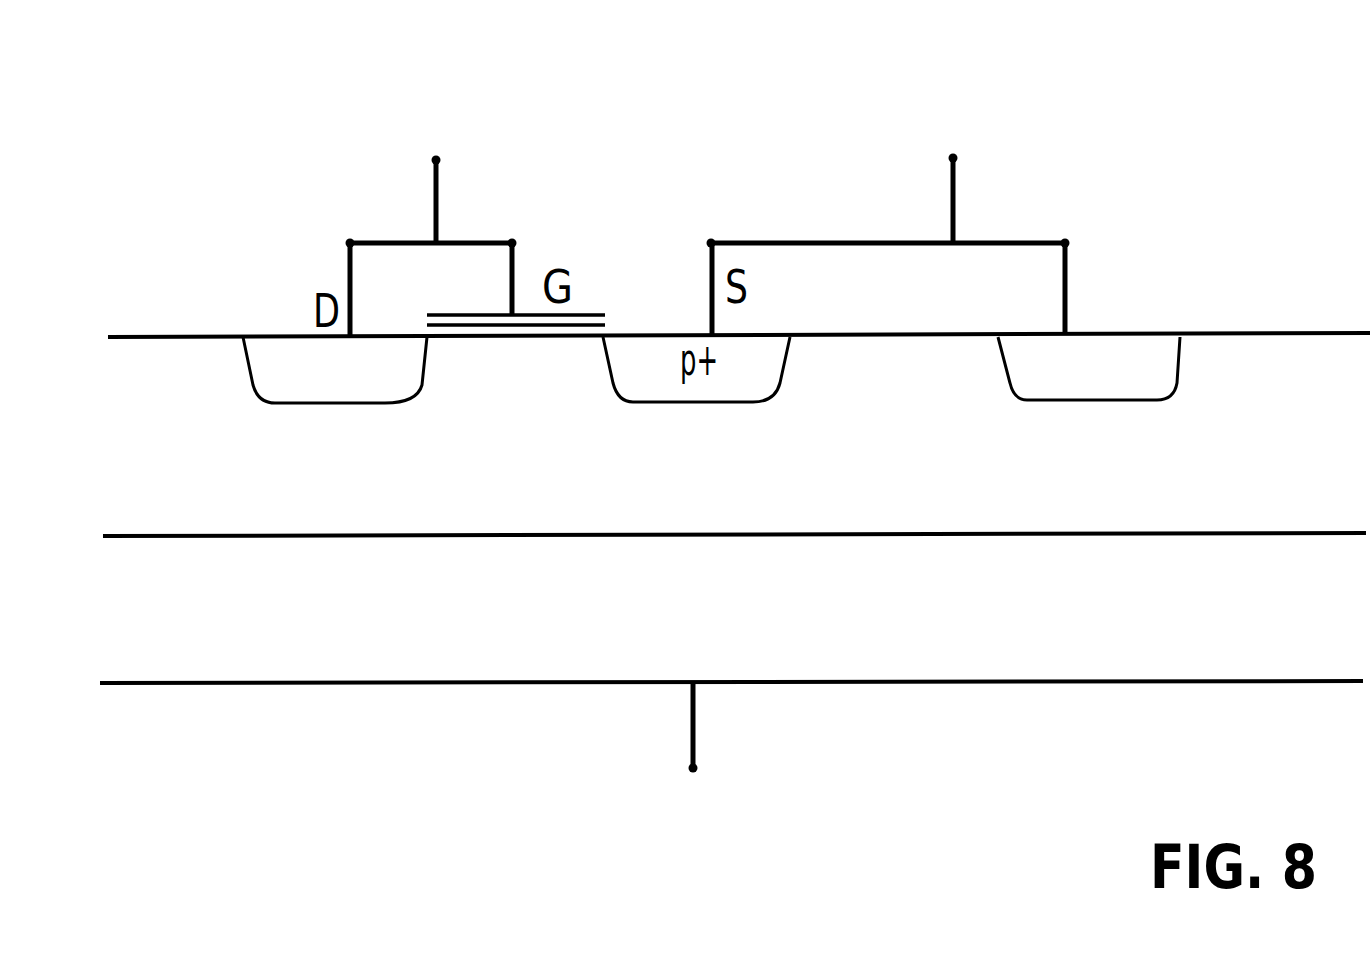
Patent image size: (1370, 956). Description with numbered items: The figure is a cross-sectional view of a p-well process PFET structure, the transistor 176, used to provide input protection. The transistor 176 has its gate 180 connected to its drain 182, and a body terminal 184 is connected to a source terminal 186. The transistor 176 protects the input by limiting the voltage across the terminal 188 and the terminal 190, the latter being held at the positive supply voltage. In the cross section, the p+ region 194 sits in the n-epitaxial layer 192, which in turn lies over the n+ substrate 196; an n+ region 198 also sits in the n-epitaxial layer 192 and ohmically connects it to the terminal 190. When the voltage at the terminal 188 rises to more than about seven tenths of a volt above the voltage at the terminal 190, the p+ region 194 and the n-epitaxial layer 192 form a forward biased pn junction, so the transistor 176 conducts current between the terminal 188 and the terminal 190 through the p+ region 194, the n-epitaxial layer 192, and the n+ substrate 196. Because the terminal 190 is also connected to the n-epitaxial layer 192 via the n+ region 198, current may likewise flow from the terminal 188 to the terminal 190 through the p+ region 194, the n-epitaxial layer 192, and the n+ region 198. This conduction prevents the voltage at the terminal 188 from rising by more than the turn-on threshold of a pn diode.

The transistor 176 is at (312, 119).
The gate 180 is at (512, 243).
The drain 182 is at (350, 243).
The body terminal 184 is at (1065, 243).
The source terminal 186 is at (710, 243).
The terminal 188 is at (436, 160).
The terminal 190 is at (953, 158).
The n-epitaxial layer 192 is at (233, 490).
The p+ region 194 is at (392, 390).
The n+ substrate 196 is at (232, 645).
The n+ region 198 is at (1143, 388).